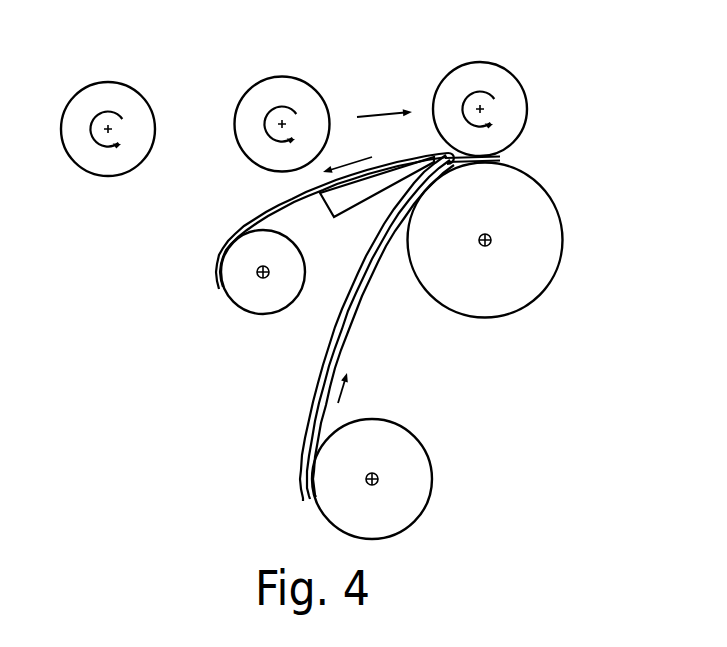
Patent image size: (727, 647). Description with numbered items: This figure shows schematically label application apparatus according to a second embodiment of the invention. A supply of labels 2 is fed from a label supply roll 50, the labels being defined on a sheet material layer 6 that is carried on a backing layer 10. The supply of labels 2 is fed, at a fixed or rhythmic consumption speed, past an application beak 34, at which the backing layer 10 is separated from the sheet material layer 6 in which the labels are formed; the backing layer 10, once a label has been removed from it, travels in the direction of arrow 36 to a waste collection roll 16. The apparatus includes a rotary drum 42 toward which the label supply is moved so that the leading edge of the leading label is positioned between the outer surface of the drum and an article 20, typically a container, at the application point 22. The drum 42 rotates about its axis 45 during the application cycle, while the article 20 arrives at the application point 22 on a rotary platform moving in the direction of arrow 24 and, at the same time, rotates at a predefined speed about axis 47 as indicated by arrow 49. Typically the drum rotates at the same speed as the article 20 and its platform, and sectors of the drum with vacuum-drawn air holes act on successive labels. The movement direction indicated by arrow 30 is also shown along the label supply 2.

The supply of labels 2 is at (337, 348).
The sheet material layer 6 is at (453, 167).
The backing layer 10 is at (268, 212).
The waste collection roll 16 is at (260, 295).
The article 20 is at (107, 95).
The application point 22 is at (500, 158).
The arrow indicating article movement direction 24 is at (374, 107).
The belt travel direction arrow 30 is at (357, 396).
The application beak 34 is at (432, 157).
The arrow indicating backing layer direction 36 is at (377, 172).
The rotary drum 42 is at (540, 229).
The drum axis 45 is at (489, 244).
The platform axis 47 is at (109, 128).
The arrow indicating article rotation 49 is at (95, 135).
The label supply roll 50 is at (402, 490).